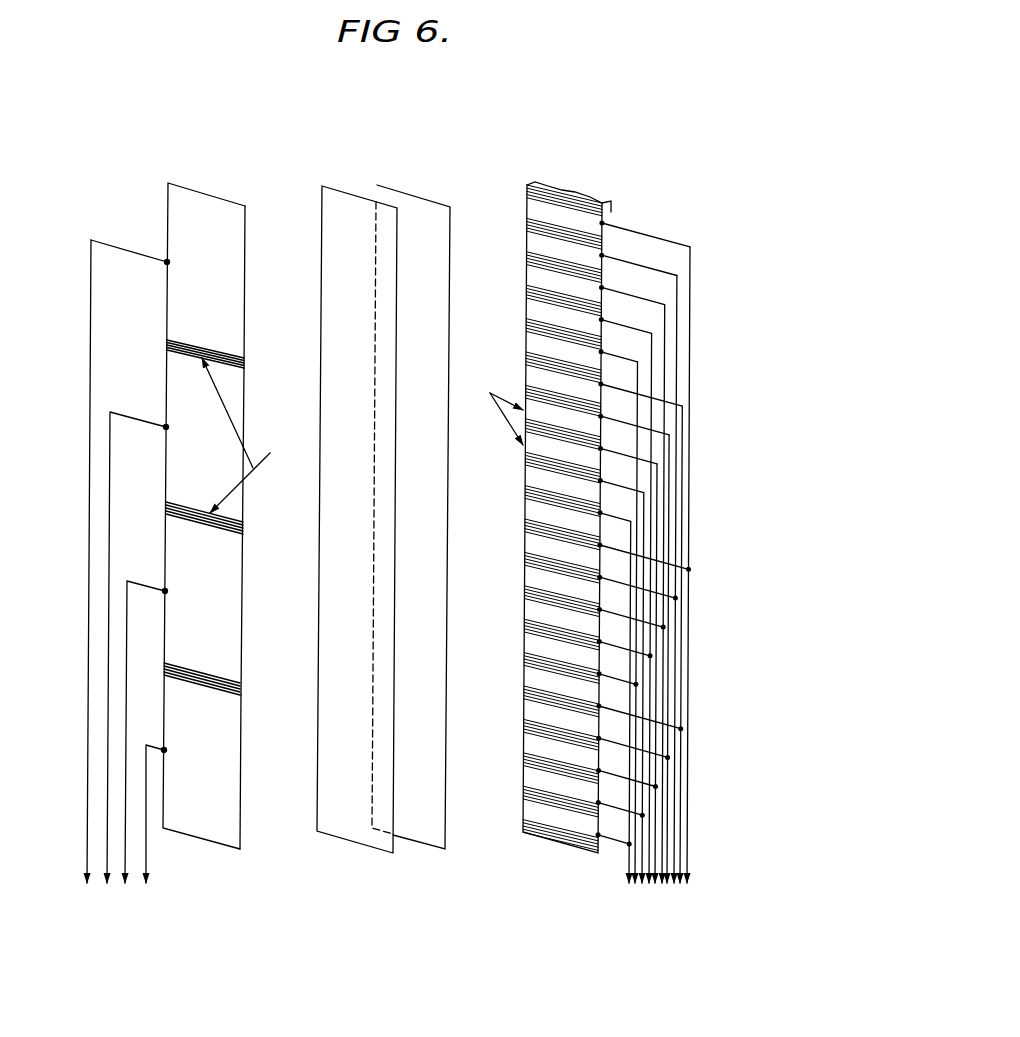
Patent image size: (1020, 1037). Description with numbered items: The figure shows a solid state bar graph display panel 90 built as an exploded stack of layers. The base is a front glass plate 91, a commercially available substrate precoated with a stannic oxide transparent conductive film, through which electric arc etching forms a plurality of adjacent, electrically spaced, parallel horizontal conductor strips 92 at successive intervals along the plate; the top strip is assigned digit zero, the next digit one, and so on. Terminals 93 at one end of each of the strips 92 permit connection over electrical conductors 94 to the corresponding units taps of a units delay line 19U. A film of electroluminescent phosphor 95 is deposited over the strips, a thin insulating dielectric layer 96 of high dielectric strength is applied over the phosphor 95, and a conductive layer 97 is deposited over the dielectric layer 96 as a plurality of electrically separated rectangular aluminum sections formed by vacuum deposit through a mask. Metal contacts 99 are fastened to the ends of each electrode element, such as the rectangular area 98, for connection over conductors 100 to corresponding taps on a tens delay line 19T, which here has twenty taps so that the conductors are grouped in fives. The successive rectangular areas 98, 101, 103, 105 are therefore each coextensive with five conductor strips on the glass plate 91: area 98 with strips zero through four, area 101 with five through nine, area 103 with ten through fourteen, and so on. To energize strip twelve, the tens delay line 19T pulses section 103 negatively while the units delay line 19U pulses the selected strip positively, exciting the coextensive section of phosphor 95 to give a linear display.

The display panel 90 is at (260, 890).
The front glass plate 91 is at (558, 185).
The conductor strips 92 is at (593, 290).
The terminals 93 is at (604, 262).
The electrical conductors 94 is at (691, 251).
The electroluminescent phosphor 95 is at (423, 195).
The dielectric layer 96 is at (342, 217).
The conductive layer 97 is at (187, 232).
The rectangular area 98 is at (238, 303).
The metal contacts 99 is at (130, 260).
The conductors 100 is at (91, 322).
The rectangular area 101 is at (235, 508).
The rectangular area 103 is at (235, 664).
The rectangular area 105 is at (235, 786).
The tens delay line 19T is at (135, 913).
The units delay line 19U is at (691, 910).